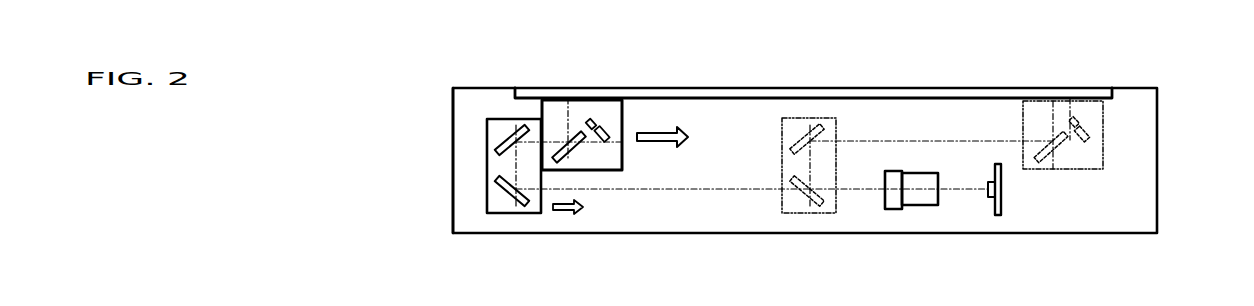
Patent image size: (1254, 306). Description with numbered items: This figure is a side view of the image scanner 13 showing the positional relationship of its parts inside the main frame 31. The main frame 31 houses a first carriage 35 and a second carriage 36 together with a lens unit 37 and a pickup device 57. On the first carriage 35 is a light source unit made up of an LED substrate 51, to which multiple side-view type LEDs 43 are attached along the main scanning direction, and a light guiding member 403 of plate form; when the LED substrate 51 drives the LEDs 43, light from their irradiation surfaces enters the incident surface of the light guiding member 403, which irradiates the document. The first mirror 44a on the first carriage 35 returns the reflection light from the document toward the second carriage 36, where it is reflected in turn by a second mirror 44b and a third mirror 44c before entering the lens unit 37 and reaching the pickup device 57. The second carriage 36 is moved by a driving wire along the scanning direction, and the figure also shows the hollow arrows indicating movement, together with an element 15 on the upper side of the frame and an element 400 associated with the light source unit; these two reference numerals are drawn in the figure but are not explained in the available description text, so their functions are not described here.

The image scanner 13 is at (437, 123).
The cover 15 is at (738, 87).
The main frame 31 is at (453, 200).
The first carriage 35 is at (607, 170).
The second carriage 36 is at (490, 120).
The lens unit 37 is at (917, 208).
The LED 43 is at (607, 128).
The first mirror 44a is at (575, 156).
The second mirror 44b is at (510, 133).
The third mirror 44c is at (508, 206).
The LED substrate 51 is at (607, 141).
The pickup device 57 is at (1002, 200).
The movement direction 400 is at (633, 122).
The light guiding member 403 is at (598, 116).